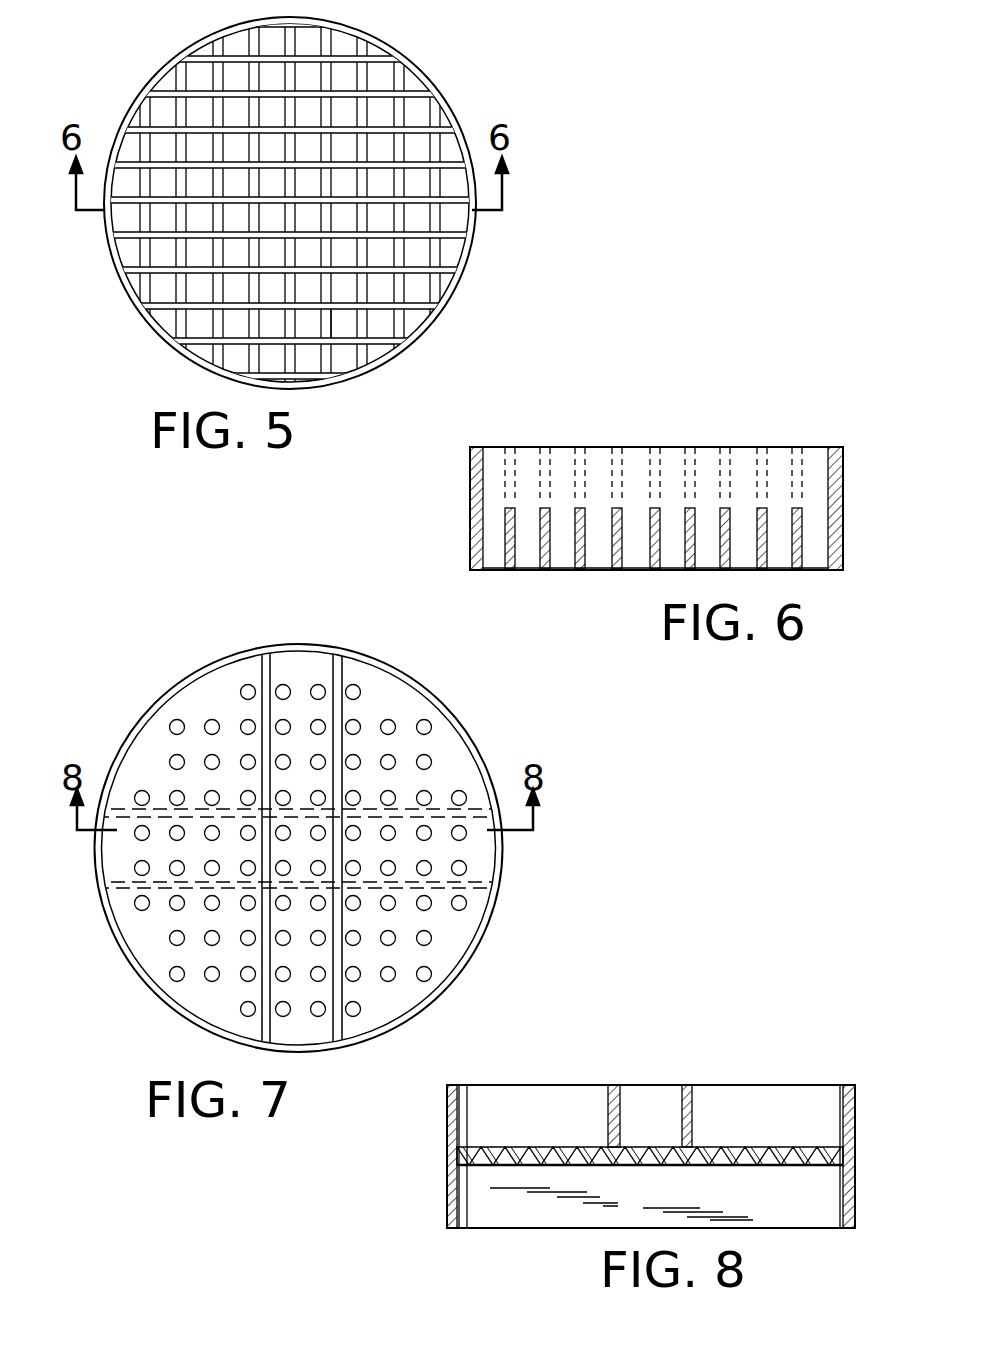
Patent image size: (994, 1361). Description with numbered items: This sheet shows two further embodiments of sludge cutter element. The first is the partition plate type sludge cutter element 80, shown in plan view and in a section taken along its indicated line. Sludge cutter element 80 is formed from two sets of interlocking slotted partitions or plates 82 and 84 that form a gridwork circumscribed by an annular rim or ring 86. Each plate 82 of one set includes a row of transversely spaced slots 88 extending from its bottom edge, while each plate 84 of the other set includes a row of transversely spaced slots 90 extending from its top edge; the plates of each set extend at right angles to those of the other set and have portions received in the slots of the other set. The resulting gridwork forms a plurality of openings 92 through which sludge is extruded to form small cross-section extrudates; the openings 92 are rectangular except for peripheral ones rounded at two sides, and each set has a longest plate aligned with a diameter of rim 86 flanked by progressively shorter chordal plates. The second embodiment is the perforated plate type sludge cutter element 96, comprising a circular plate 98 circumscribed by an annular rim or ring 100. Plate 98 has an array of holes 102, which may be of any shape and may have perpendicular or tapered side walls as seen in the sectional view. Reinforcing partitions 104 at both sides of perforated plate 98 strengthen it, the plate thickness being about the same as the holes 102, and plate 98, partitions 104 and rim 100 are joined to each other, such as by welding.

In FIG. 5, the sludge cutter element 80 is at (304, 210).
In FIG. 6, the slotted partitions or plates 82 is at (527, 452).
In FIG. 5, the slotted partitions or plates 84 is at (170, 291).
In FIG. 6, the slotted partitions or plates 84 is at (582, 545).
In FIG. 5, the annular rim or ring 86 is at (425, 319).
In FIG. 6, the annular rim or ring 86 is at (470, 500).
In FIG. 6, the slots 88 is at (508, 548).
In FIG. 6, the slots 90 is at (657, 470).
In FIG. 5, the openings 92 is at (344, 330).
In FIG. 7, the sludge cutter element 96 is at (304, 830).
In FIG. 7, the circular plate 98 is at (407, 703).
In FIG. 8, the circular plate 98 is at (470, 1148).
In FIG. 7, the annular rim or ring 100 is at (478, 952).
In FIG. 8, the annular rim or ring 100 is at (447, 1198).
In FIG. 7, the holes 102 is at (177, 718).
In FIG. 8, the holes 102 is at (737, 1156).
In FIG. 7, the reinforcing partitions 104 is at (344, 672).
In FIG. 8, the reinforcing partitions 104 is at (622, 1103).